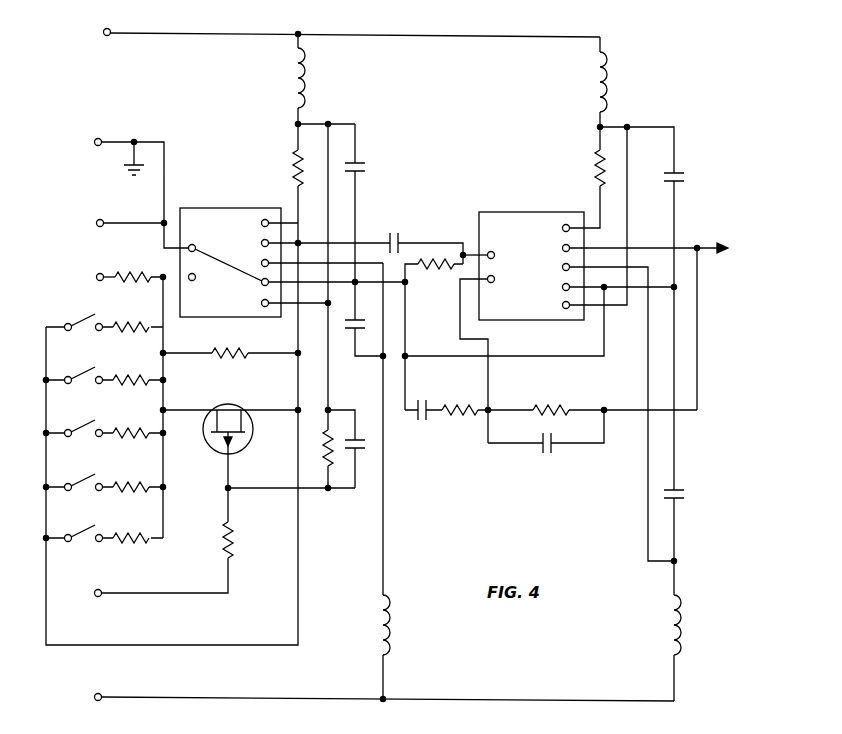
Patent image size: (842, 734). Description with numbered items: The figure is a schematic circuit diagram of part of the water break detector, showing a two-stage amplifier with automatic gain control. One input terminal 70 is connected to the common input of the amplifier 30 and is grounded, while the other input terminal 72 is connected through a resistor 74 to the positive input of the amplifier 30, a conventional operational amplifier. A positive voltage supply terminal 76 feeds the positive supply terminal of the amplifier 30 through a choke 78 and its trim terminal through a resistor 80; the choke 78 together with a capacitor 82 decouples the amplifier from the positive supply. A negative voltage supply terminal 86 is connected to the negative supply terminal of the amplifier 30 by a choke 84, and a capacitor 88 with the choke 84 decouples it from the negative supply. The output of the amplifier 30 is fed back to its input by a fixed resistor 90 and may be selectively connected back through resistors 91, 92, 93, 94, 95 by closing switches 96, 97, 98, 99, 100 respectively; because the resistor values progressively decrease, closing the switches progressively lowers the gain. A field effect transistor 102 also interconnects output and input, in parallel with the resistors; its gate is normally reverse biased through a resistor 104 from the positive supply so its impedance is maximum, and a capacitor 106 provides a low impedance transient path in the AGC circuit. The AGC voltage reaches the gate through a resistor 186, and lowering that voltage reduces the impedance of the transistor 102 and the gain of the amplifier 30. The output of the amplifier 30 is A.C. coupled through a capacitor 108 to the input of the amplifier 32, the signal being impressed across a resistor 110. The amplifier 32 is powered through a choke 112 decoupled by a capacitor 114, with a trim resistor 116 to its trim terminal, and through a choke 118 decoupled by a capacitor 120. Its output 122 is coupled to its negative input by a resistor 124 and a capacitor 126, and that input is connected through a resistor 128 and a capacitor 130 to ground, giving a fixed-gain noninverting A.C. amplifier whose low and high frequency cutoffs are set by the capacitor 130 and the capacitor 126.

The amplifier 30 is at (210, 211).
The amplifier 32 is at (500, 213).
The input terminal 70 is at (109, 218).
The input terminal 72 is at (103, 282).
The resistor 74 is at (128, 267).
The positive voltage supply terminal 76 is at (110, 37).
The choke 78 is at (304, 70).
The resistor 80 is at (292, 160).
The capacitor 82 is at (363, 167).
The choke 84 is at (390, 617).
The negative voltage supply terminal 86 is at (102, 697).
The capacitor 88 is at (352, 333).
The fixed resistor 90 is at (232, 357).
The resistor 91 is at (140, 324).
The resistor 92 is at (138, 380).
The resistor 93 is at (135, 434).
The resistor 94 is at (135, 488).
The resistor 95 is at (132, 540).
The switch 96 is at (79, 321).
The switch 97 is at (90, 376).
The switch 98 is at (88, 428).
The switch 99 is at (88, 484).
The switch 100 is at (93, 537).
The field effect transistor 102 is at (231, 404).
The resistor 104 is at (320, 447).
The capacitor 106 is at (365, 450).
The capacitor 108 is at (395, 237).
The resistor 110 is at (434, 270).
The choke 112 is at (608, 70).
The capacitor 114 is at (684, 174).
The trim resistor 116 is at (592, 160).
The choke 118 is at (684, 616).
The capacitor 120 is at (682, 498).
The output 122 is at (691, 246).
The resistor 124 is at (550, 406).
The capacitor 126 is at (550, 446).
The resistor 128 is at (450, 406).
The capacitor 130 is at (424, 413).
The resistor 186 is at (232, 532).